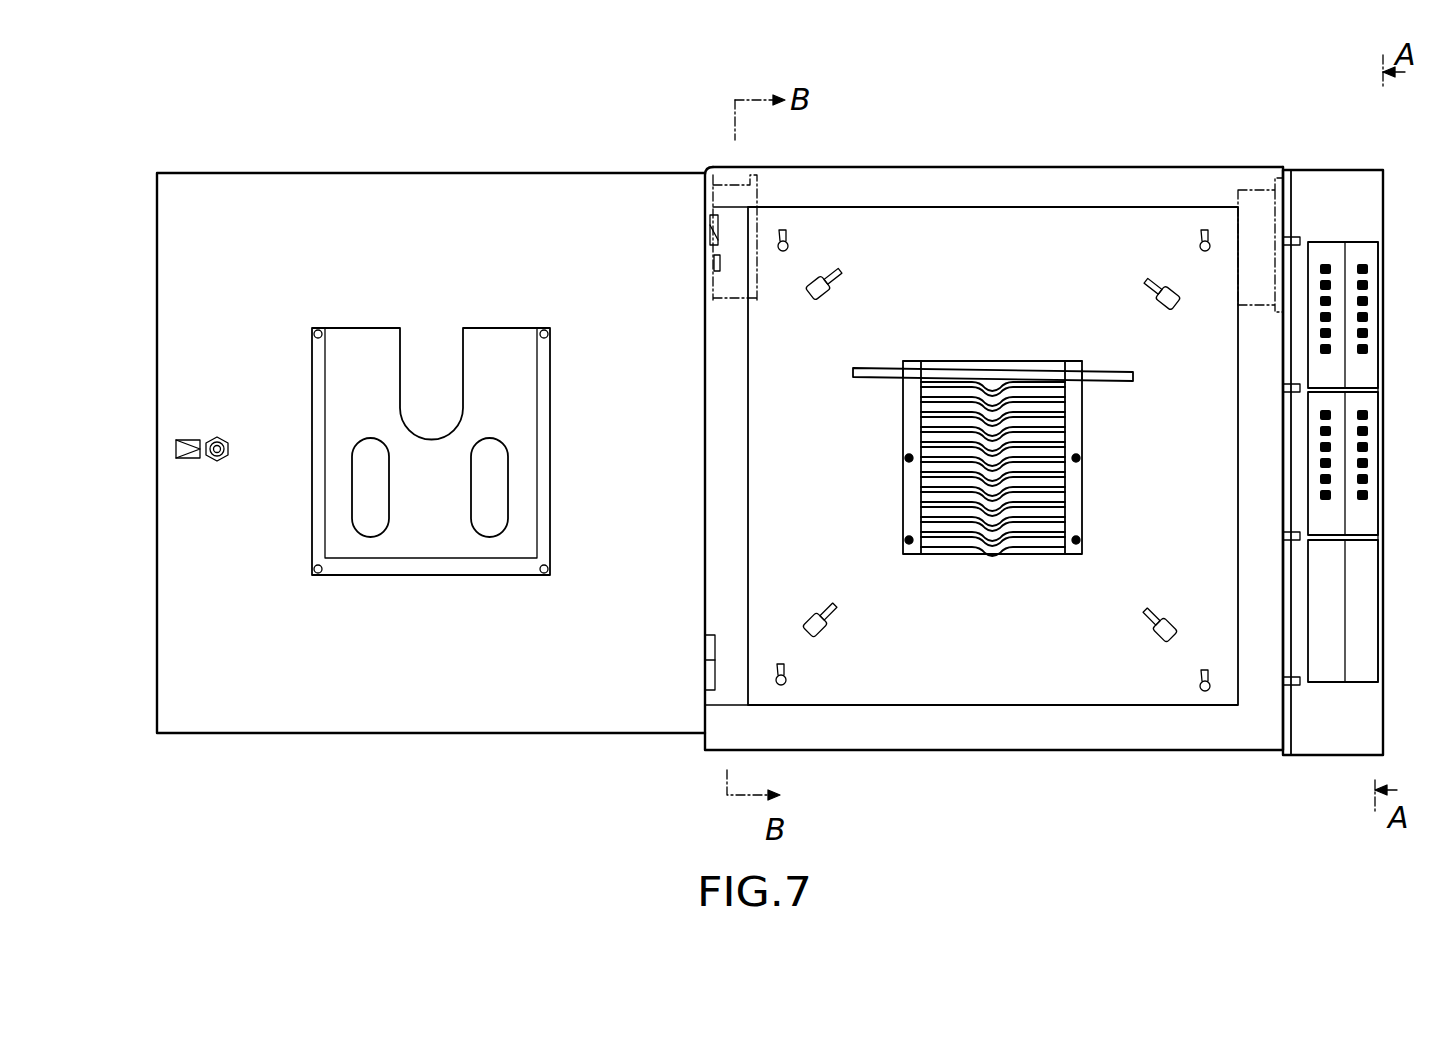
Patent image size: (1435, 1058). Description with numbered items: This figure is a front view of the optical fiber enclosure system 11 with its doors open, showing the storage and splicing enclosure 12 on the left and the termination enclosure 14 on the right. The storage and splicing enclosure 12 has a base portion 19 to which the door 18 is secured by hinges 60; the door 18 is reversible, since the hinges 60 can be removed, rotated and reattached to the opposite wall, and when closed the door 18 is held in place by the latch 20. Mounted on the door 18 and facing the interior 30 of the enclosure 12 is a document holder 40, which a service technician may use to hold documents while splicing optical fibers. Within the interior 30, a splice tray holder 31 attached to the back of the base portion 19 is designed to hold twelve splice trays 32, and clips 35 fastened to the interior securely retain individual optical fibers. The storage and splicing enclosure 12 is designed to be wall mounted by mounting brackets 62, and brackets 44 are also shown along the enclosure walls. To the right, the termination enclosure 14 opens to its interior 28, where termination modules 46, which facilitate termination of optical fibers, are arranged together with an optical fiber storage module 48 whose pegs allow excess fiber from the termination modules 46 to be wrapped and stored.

The enclosure assembly 11 is at (1002, 70).
The storage and splicing enclosure 12 is at (1015, 167).
The termination enclosure 14 is at (1383, 193).
The door 18 is at (428, 173).
The base portion 19 is at (905, 167).
The latch 20 is at (200, 440).
The interior of termination enclosure 28 is at (1392, 489).
The interior 30 is at (1066, 268).
The splice tray holder 31 is at (1010, 550).
The splice tray 32 is at (878, 366).
The clip 35 is at (842, 303).
The document holder 40 is at (514, 302).
The mounting bracket 44 is at (752, 212).
The termination module 46 is at (1380, 286).
The optical fiber storage module 48 is at (1380, 590).
The hinge 60 is at (720, 222).
The mounting bracket 62 is at (791, 239).